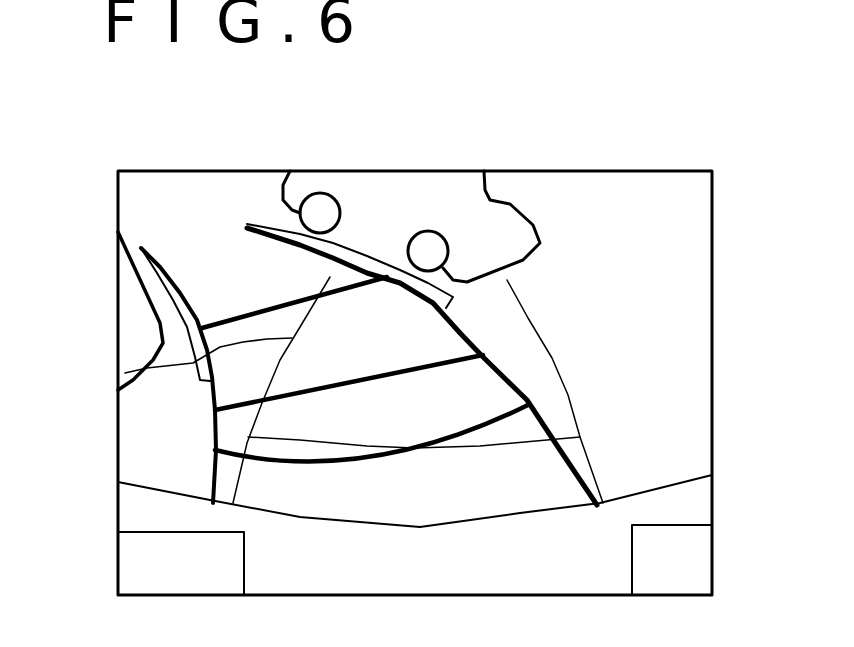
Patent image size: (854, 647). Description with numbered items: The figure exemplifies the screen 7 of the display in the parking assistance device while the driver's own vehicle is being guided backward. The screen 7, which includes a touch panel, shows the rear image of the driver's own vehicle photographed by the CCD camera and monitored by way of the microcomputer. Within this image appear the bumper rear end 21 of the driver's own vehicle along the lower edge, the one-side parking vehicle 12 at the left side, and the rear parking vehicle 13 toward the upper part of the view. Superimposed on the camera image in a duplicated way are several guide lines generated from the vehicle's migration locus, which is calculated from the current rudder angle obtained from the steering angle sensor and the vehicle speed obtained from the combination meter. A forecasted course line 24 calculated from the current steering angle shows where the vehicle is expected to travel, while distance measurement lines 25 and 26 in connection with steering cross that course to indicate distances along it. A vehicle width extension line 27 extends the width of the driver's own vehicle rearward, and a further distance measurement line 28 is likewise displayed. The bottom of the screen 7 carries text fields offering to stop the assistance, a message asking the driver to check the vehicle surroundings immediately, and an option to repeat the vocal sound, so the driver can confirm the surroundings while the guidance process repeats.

The screen 7 is at (418, 328).
The one-side parking vehicle 12 is at (110, 311).
The rear parking vehicle 13 is at (422, 320).
The bumper rear end 21 is at (441, 493).
The forecasted course line 24 is at (281, 220).
The distance measurement line 25 is at (491, 332).
The distance measurement line 26 is at (483, 408).
The vehicle width extension line 27 is at (177, 375).
The distance measurement line 28 is at (318, 431).